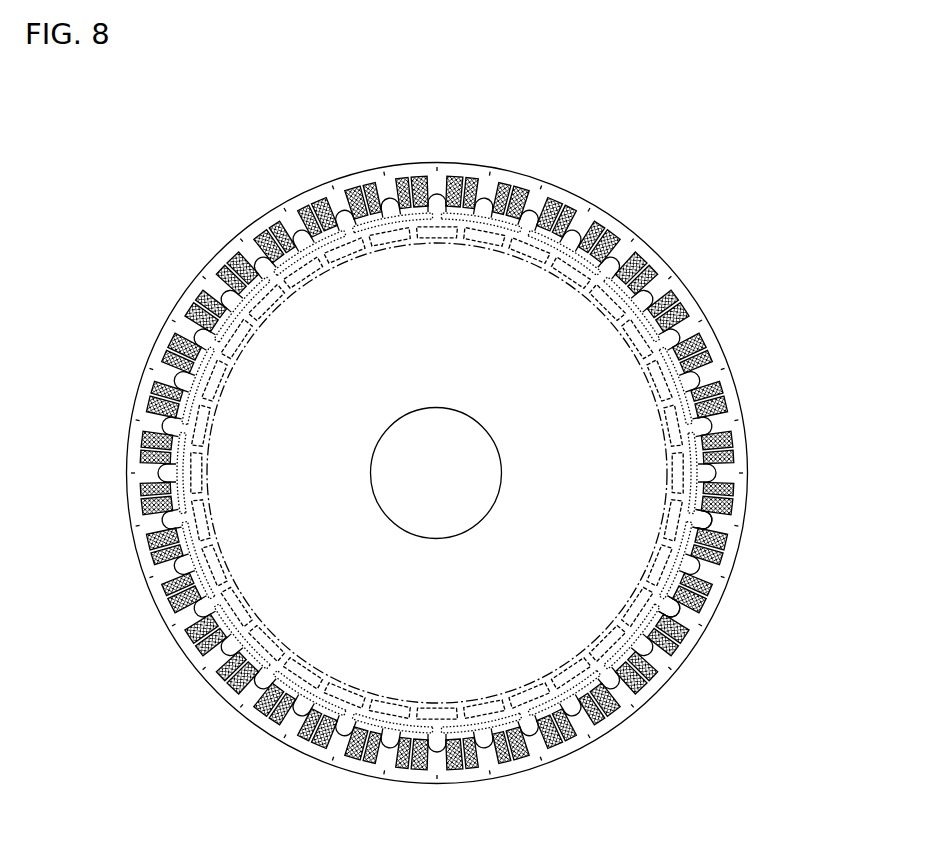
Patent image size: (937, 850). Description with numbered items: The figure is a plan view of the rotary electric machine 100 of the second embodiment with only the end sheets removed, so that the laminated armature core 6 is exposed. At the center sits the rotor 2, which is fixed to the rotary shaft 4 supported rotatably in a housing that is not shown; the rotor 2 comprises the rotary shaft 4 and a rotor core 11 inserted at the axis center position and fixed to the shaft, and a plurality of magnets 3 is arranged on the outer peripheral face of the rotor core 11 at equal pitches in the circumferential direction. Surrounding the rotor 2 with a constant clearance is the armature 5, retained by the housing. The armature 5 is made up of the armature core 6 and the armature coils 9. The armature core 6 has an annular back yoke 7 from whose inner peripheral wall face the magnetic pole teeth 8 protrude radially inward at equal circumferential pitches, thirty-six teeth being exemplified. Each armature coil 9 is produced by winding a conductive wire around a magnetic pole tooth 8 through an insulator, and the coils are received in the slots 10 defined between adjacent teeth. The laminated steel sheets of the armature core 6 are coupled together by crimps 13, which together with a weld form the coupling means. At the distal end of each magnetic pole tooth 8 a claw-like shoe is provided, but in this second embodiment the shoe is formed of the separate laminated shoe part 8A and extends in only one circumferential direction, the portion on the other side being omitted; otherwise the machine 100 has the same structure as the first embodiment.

The rotary electric machine 100 is at (697, 229).
The rotor 2 is at (240, 533).
The magnets 3 is at (312, 700).
The rotary shaft 4 is at (478, 511).
The armature 5 is at (623, 738).
The armature core 6 is at (658, 693).
The back yoke 7 is at (680, 645).
The magnetic pole teeth 8 is at (697, 570).
The shoe part 8A is at (684, 599).
The armature coils 9 is at (697, 510).
The slots 10 is at (732, 447).
The rotor core 11 is at (162, 582).
The crimps 13 is at (740, 420).